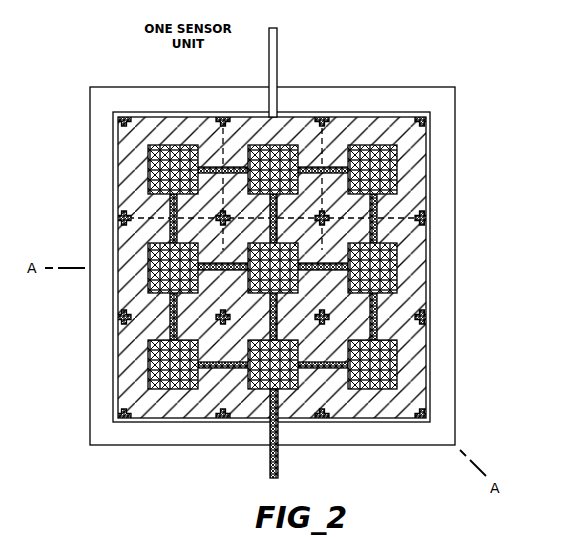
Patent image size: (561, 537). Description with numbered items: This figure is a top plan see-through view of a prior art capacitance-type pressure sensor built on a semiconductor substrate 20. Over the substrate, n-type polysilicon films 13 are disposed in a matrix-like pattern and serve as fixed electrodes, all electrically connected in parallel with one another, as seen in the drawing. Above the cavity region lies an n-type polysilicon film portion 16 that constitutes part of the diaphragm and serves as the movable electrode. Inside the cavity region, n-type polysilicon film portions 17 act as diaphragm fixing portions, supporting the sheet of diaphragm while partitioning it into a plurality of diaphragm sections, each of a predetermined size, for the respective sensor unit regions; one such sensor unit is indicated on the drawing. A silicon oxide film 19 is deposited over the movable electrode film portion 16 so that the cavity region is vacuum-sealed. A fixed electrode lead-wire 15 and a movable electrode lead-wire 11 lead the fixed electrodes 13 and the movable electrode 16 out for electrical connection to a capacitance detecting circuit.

The movable electrode lead-wire 11 is at (278, 31).
The n-type polysilicon films 13 is at (383, 145).
The fixed electrode lead-wire 15 is at (279, 470).
The n-type polysilicon film portion 16 is at (347, 118).
The n-type polysilicon film portions 17 is at (330, 216).
The silicon oxide film 19 is at (298, 98).
The semiconductor substrate 20 is at (207, 122).